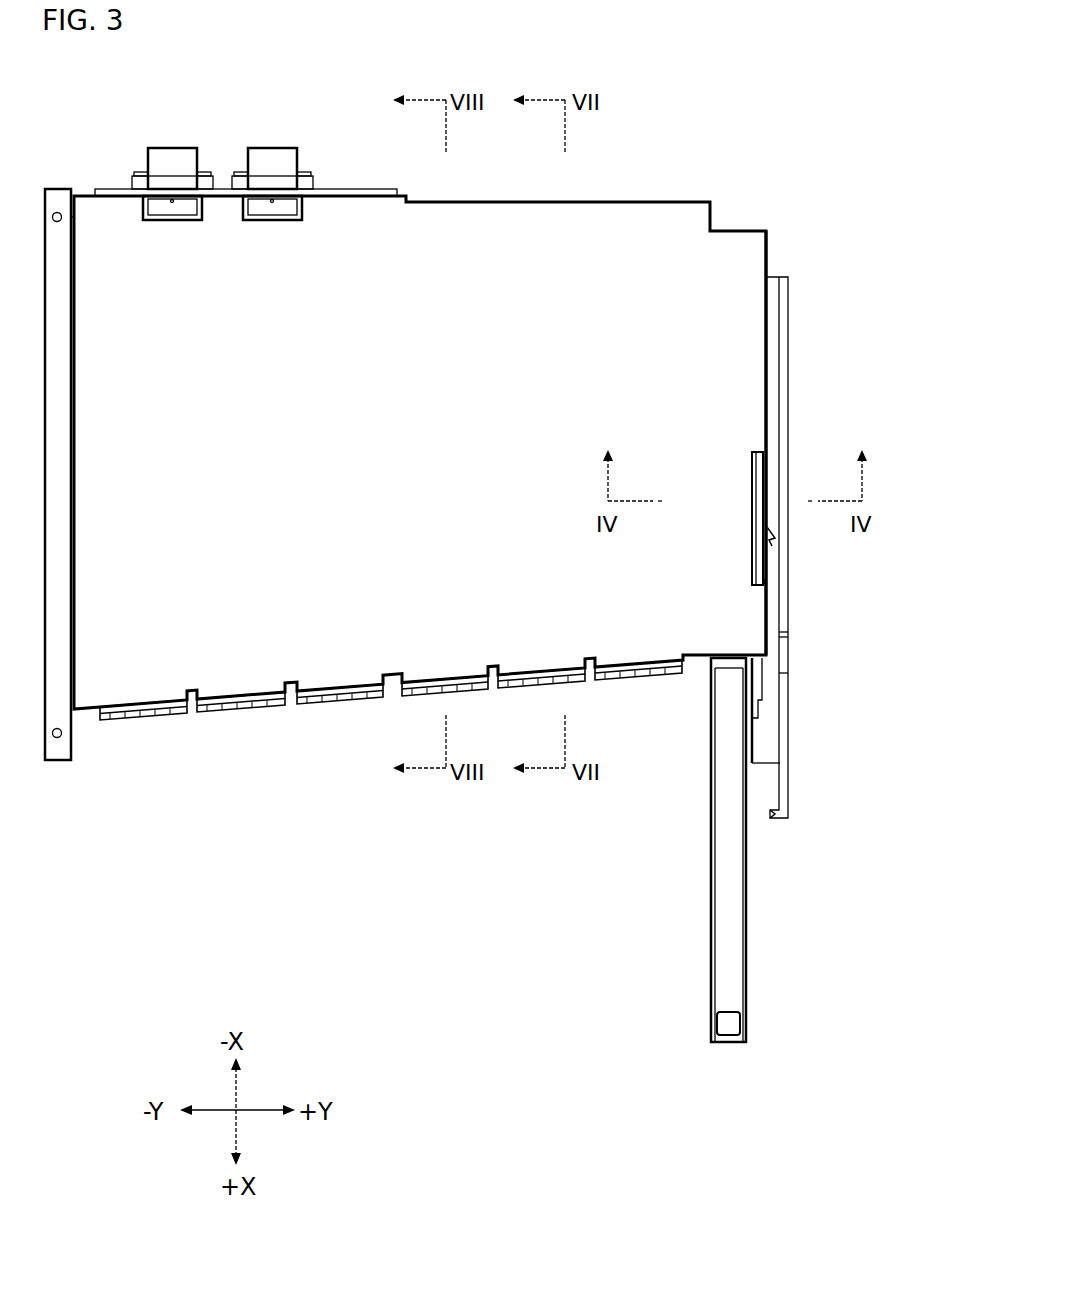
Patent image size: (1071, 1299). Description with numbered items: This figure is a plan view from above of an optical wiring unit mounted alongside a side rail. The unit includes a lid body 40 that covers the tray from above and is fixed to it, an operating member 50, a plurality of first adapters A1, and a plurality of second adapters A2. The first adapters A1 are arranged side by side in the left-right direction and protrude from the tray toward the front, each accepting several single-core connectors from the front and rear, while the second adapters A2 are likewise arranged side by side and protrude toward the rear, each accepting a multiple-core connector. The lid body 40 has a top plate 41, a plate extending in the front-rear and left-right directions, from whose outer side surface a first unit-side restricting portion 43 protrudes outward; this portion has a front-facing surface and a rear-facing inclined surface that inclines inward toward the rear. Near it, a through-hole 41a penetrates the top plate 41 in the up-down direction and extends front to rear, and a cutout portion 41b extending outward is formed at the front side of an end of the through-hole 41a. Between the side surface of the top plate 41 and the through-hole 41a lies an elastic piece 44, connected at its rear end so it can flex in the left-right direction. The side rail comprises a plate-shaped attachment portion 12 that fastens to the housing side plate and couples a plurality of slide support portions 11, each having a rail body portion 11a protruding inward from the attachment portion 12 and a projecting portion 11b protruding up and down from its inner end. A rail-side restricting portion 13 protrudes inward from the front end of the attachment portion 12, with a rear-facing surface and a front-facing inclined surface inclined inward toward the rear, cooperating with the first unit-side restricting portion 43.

The lid body 40 is at (610, 195).
The top plate 41 is at (690, 287).
The through-hole 41a is at (757, 460).
The cutout portion 41b is at (764, 580).
The first unit-side restricting portion 43 is at (770, 536).
The elastic piece 44 is at (762, 482).
The attachment portion 12 is at (790, 692).
The slide support portion 11 is at (845, 728).
The rail body portion 11a is at (769, 750).
The projecting portion 11b is at (759, 702).
The rail-side restricting portion 13 is at (773, 820).
The operating member 50 is at (705, 1042).
The first adapter A1 is at (153, 722).
The second adapter A2 is at (172, 165).